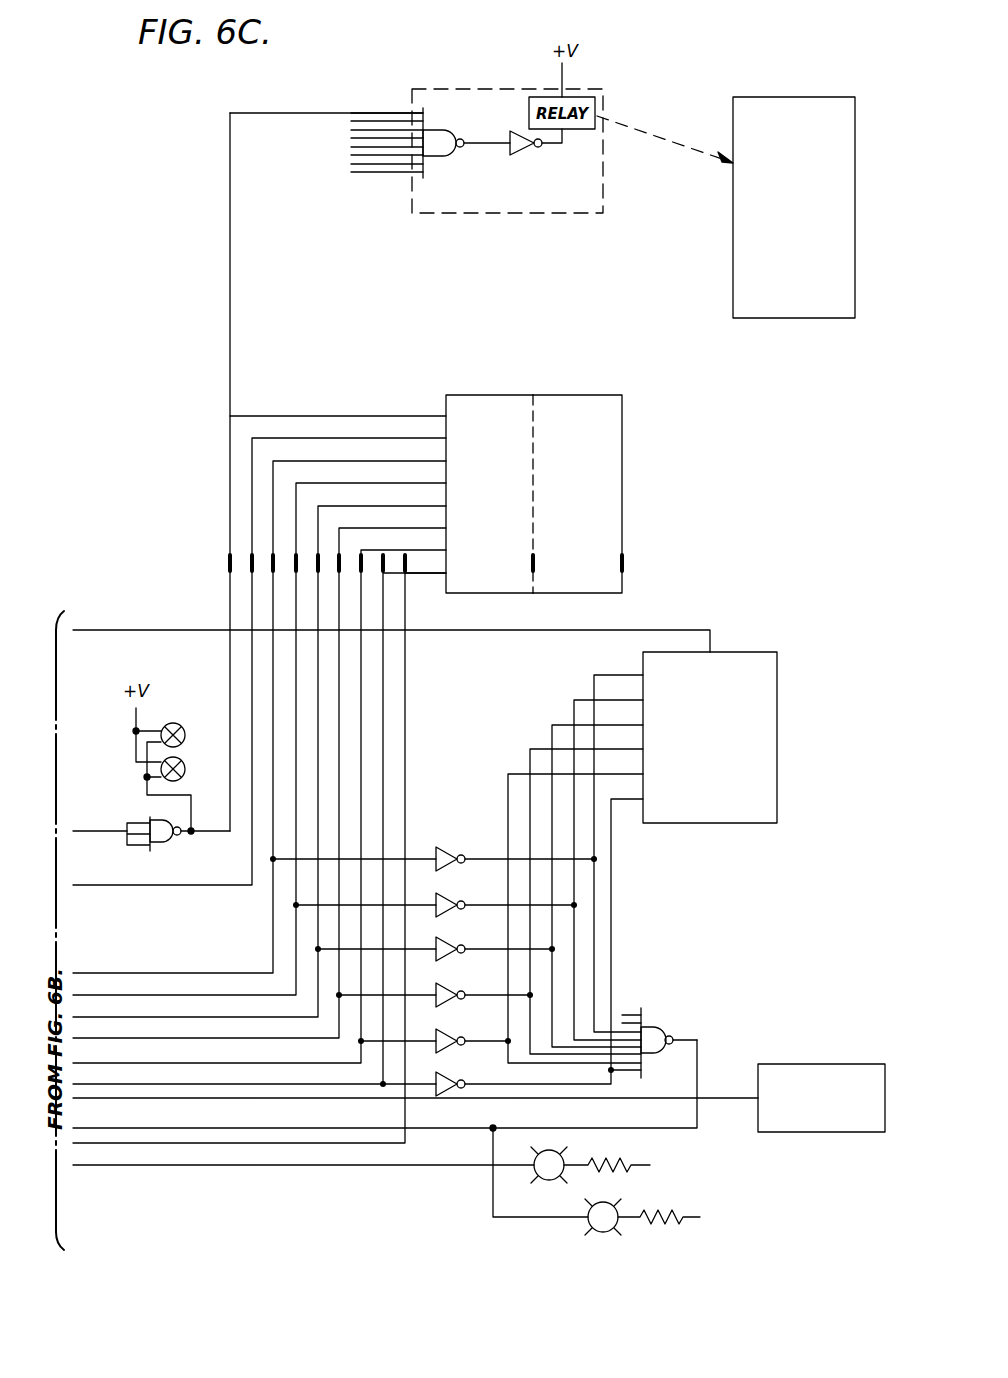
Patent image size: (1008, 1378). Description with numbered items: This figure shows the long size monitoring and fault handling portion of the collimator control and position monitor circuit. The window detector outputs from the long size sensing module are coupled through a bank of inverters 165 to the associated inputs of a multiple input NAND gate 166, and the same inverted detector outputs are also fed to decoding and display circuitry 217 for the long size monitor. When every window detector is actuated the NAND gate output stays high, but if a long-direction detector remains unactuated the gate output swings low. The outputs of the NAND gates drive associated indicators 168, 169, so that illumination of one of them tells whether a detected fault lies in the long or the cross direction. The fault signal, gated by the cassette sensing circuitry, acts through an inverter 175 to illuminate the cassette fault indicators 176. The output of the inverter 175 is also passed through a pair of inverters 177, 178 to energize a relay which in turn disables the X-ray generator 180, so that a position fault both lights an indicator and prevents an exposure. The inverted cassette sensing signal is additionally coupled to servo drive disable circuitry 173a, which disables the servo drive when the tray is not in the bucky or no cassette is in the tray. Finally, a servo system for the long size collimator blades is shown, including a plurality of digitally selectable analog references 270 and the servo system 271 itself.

The inverters 165 is at (468, 802).
The multiple input NAND gate 166 is at (660, 1027).
The indicator 168 is at (566, 1153).
The indicator 169 is at (601, 1232).
The servo drive disable circuitry 173a is at (836, 1064).
The inverter 175 is at (160, 845).
The cassette fault indicators 176 is at (186, 766).
The inverter 177 is at (445, 156).
The inverter 178 is at (525, 156).
The X-ray generator 180 is at (813, 97).
The decoding and display circuitry 217 is at (752, 652).
The digitally selectable analog references 270 is at (484, 395).
The servo system 271 is at (604, 395).